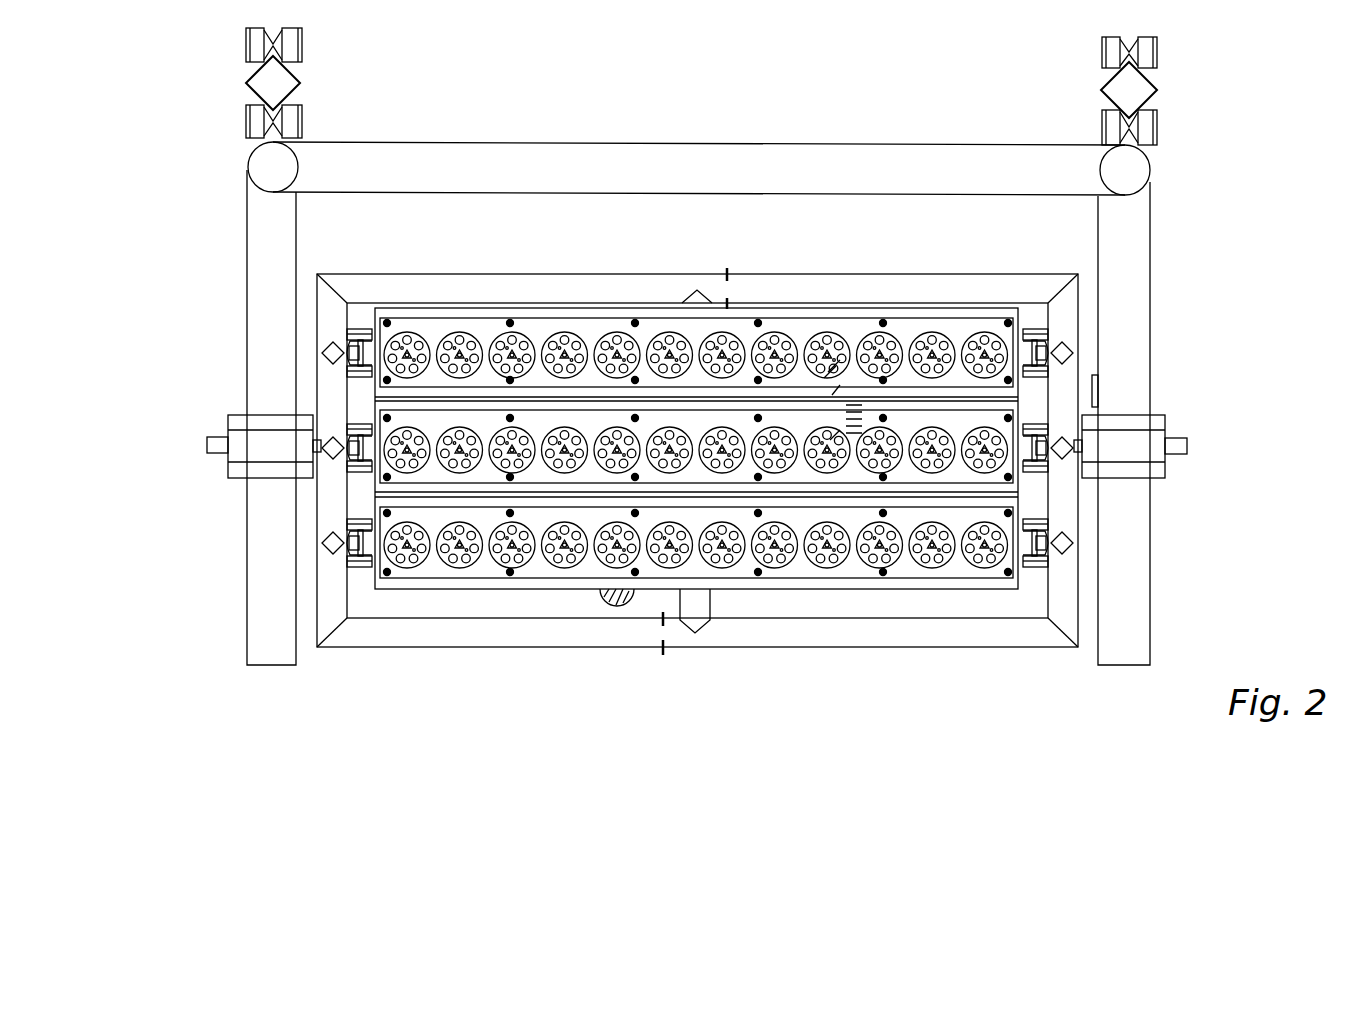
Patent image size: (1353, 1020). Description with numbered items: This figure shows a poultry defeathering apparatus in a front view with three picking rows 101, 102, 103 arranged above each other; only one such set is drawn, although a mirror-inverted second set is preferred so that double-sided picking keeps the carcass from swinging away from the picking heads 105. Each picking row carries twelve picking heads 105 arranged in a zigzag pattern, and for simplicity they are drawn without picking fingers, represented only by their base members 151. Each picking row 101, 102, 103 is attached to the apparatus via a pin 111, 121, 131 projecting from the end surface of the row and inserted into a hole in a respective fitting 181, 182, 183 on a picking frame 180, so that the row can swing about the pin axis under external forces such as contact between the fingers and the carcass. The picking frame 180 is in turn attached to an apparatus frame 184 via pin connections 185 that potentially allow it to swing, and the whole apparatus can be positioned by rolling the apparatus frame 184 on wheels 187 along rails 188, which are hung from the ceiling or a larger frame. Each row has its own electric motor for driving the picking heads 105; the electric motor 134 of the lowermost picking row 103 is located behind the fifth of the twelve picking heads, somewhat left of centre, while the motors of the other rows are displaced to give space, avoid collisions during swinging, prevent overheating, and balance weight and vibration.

The picking row 101 is at (530, 300).
The picking row 102 is at (449, 390).
The picking row 103 is at (462, 597).
The picking head 105 is at (664, 316).
The base member 151 is at (575, 328).
The pin 111 is at (358, 347).
The pin 121 is at (355, 456).
The pin 131 is at (352, 560).
The electric motor 134 is at (617, 597).
The picking frame 180 is at (827, 292).
The fitting 181 is at (322, 352).
The fitting 182 is at (322, 445).
The fitting 183 is at (325, 542).
The apparatus frame 184 is at (1130, 255).
The pin connection 185 is at (1180, 450).
The wheel 187 is at (1157, 46).
The rail 188 is at (1138, 92).